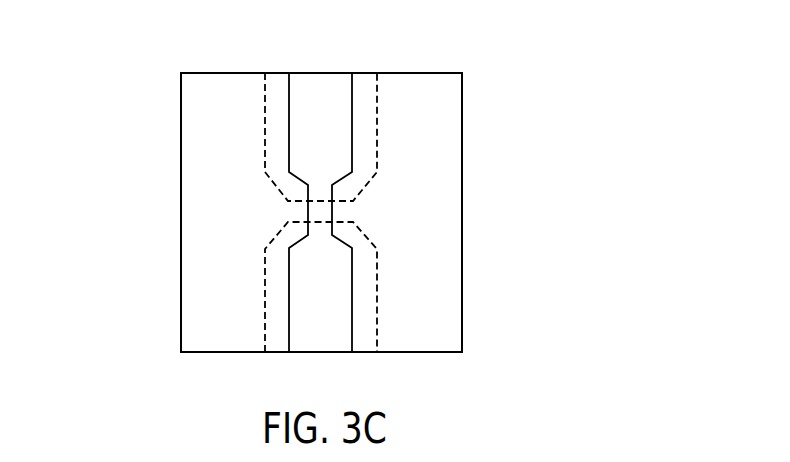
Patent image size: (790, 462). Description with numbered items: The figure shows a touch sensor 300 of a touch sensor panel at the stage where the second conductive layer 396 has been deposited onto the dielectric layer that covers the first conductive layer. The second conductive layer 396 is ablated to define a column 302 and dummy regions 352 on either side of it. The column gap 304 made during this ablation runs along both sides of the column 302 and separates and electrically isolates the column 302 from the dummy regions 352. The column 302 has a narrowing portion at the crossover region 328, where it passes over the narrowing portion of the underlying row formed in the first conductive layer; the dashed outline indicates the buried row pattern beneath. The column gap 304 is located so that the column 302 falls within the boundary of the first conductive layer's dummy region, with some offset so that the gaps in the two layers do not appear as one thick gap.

The touch sensor 300 is at (494, 83).
The column 302 is at (323, 348).
The column gap 304 is at (322, 90).
The crossover region 328 is at (368, 213).
The dummy regions 352 is at (445, 193).
The second conductive layer 396 is at (197, 118).